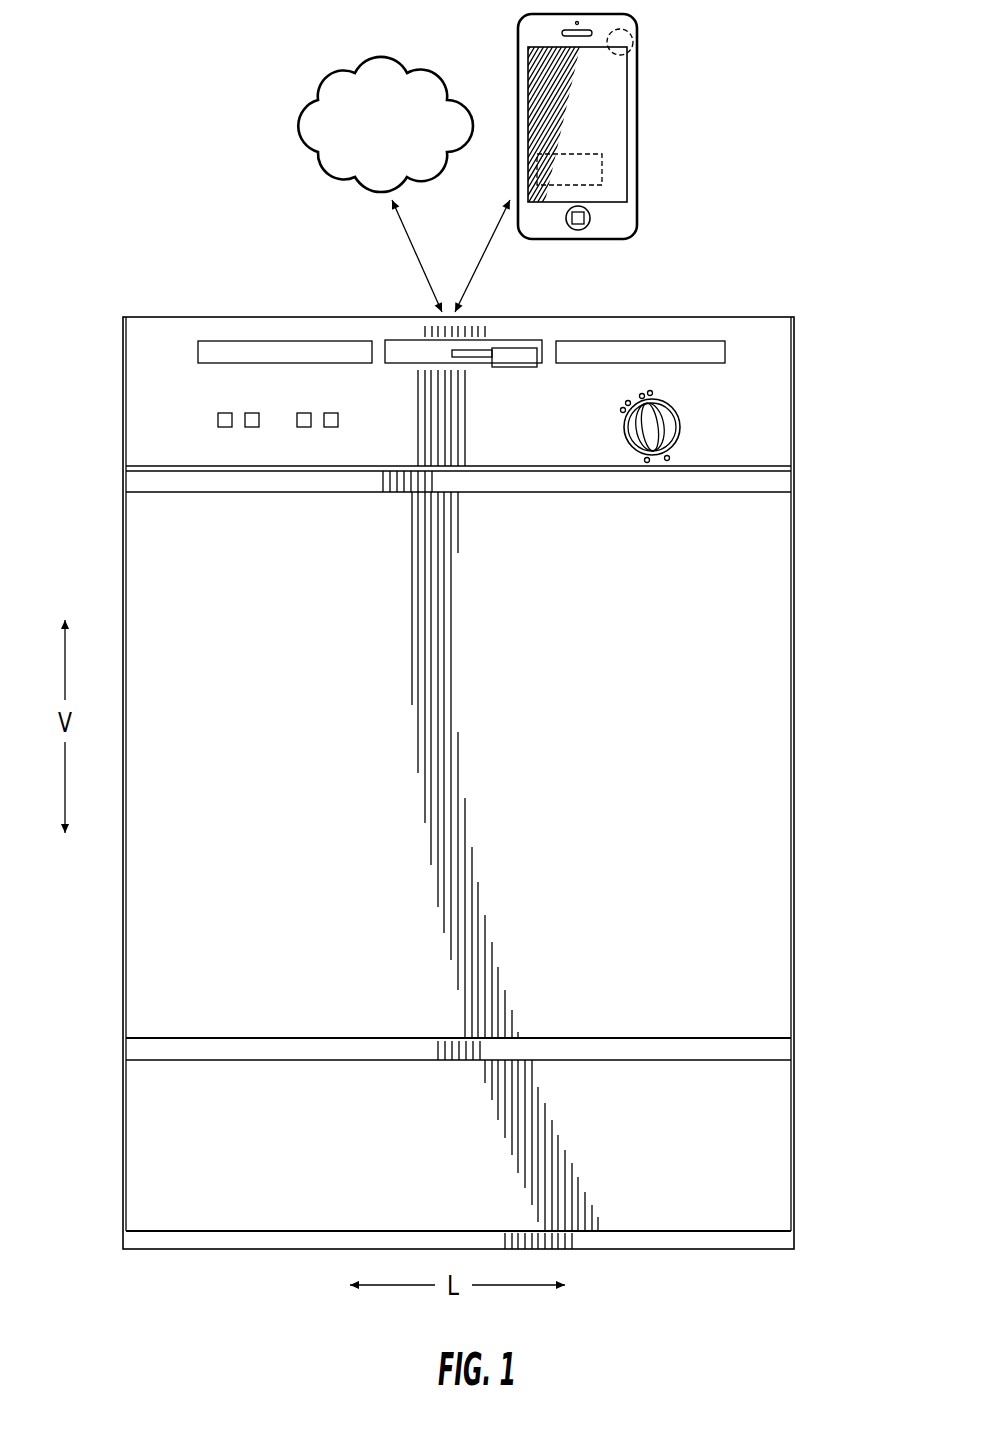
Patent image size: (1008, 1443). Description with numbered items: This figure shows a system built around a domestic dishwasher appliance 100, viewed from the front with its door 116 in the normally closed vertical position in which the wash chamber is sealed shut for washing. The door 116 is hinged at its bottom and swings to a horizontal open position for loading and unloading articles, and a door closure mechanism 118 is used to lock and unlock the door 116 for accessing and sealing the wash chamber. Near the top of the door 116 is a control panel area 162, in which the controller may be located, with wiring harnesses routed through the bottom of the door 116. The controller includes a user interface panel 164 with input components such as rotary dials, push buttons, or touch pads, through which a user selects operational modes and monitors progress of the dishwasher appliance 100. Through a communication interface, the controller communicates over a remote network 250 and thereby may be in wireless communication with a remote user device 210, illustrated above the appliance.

The dishwasher appliance 100 is at (135, 142).
The door 116 is at (740, 620).
The door closure mechanism 118 is at (522, 353).
The control panel area 162 is at (760, 365).
The user interface panel 164 is at (303, 412).
The remote user device 210 is at (638, 90).
The remote network 250 is at (400, 135).